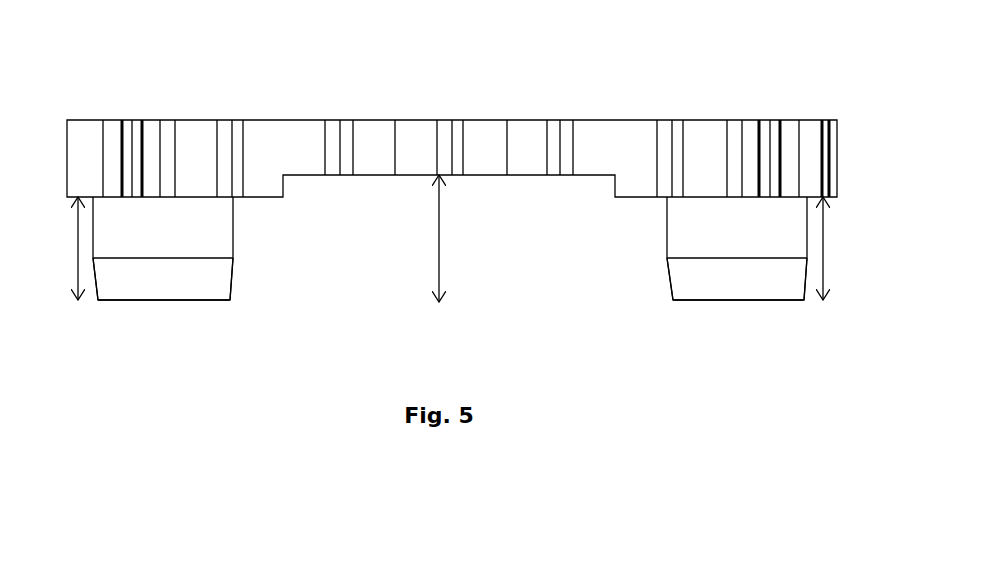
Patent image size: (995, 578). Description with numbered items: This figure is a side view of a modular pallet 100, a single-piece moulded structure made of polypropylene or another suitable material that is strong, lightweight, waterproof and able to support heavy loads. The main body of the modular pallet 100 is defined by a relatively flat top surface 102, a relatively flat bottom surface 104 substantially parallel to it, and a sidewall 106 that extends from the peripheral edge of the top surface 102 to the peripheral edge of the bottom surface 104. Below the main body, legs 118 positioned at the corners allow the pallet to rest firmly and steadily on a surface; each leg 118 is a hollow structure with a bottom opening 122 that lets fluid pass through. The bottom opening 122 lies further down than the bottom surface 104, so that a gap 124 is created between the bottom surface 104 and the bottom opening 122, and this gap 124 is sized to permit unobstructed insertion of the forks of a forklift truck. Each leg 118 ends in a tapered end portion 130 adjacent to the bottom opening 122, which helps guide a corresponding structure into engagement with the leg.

The modular pallet 100 is at (158, 82).
The top surface 102 is at (708, 120).
The bottom surface 104 is at (528, 177).
The sidewall 106 is at (466, 158).
The leg 118 is at (450, 248).
The bottom opening 122 is at (156, 300).
The gap 124 is at (447, 238).
The tapered end portion 130 is at (232, 277).